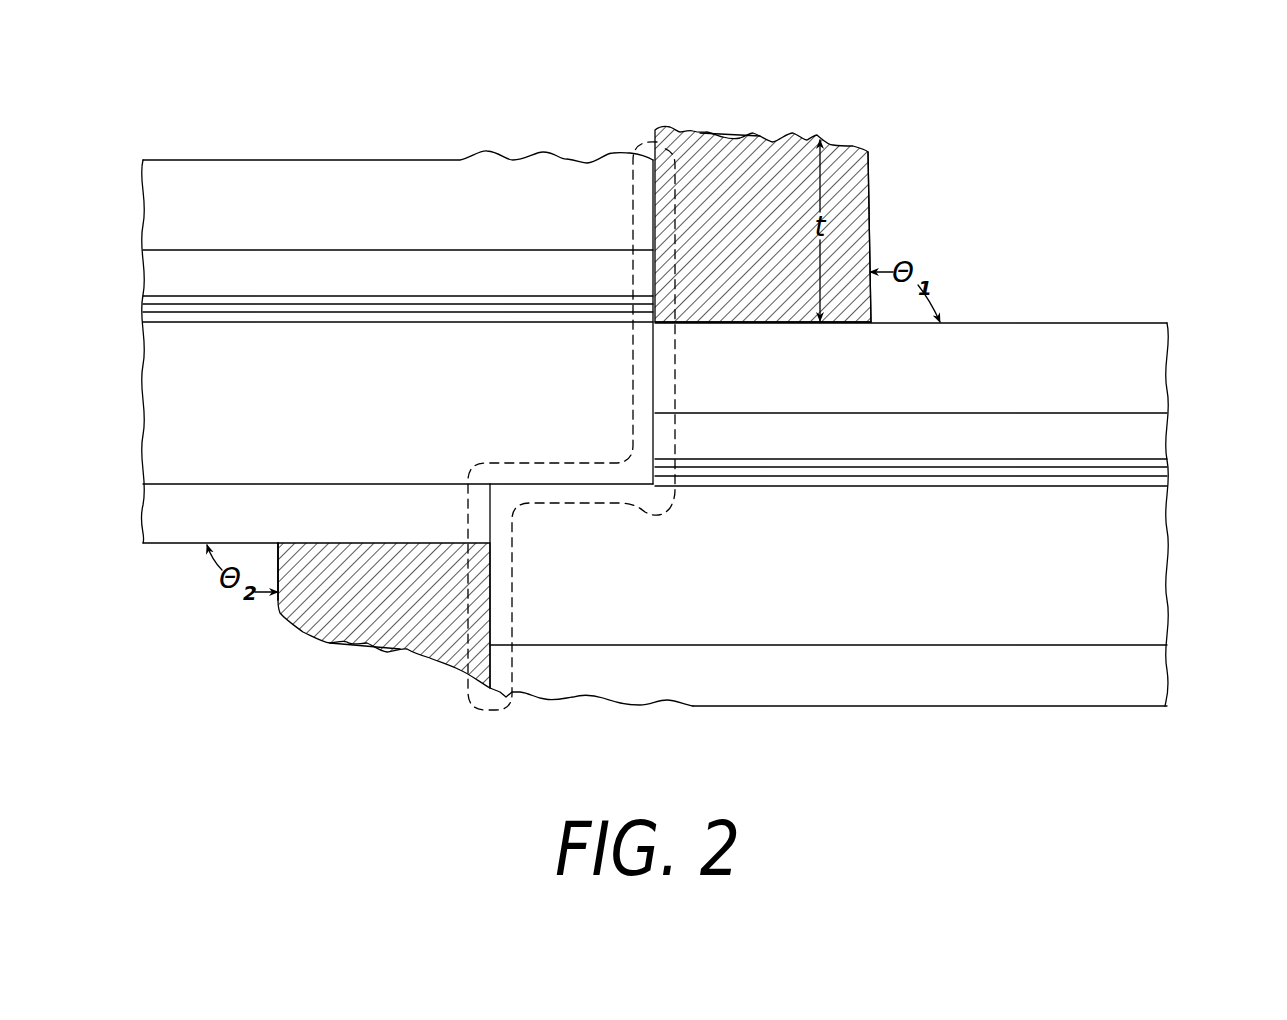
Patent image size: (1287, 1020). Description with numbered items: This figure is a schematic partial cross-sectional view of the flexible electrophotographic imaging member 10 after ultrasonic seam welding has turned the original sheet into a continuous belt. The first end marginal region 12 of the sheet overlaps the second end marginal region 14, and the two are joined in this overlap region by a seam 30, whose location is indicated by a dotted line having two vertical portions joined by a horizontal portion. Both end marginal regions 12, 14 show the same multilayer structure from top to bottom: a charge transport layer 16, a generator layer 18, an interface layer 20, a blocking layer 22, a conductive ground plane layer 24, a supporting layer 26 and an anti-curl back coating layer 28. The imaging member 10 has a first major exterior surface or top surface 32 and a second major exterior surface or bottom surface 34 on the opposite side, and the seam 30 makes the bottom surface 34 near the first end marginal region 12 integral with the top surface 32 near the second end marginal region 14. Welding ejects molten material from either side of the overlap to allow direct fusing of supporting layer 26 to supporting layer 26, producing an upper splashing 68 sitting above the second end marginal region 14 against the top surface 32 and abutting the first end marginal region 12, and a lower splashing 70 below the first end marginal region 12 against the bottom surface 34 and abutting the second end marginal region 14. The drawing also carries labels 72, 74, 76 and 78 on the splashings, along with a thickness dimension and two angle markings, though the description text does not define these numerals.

The optical medium 10 is at (1100, 182).
The first layered stack 12 is at (560, 94).
The second layered stack 14 is at (558, 724).
The first layer 16 is at (150, 195).
The second layer 18 is at (152, 258).
The third layer 20 is at (147, 299).
The thin layer 22 is at (145, 313).
The fourth layer 24 is at (145, 320).
The fifth layer 26 is at (153, 400).
The sixth layer 28 is at (153, 499).
The boundary of removed region 30 is at (470, 706).
The top surface 32 is at (280, 160).
The bottom surface 34 is at (175, 543).
The first raised portion 68 is at (855, 118).
The second raised portion 70 is at (336, 666).
The side wall 72 is at (870, 202).
The top of raised portion 74 is at (757, 128).
The base of raised portion 76 is at (862, 323).
The corner region 78 is at (278, 545).